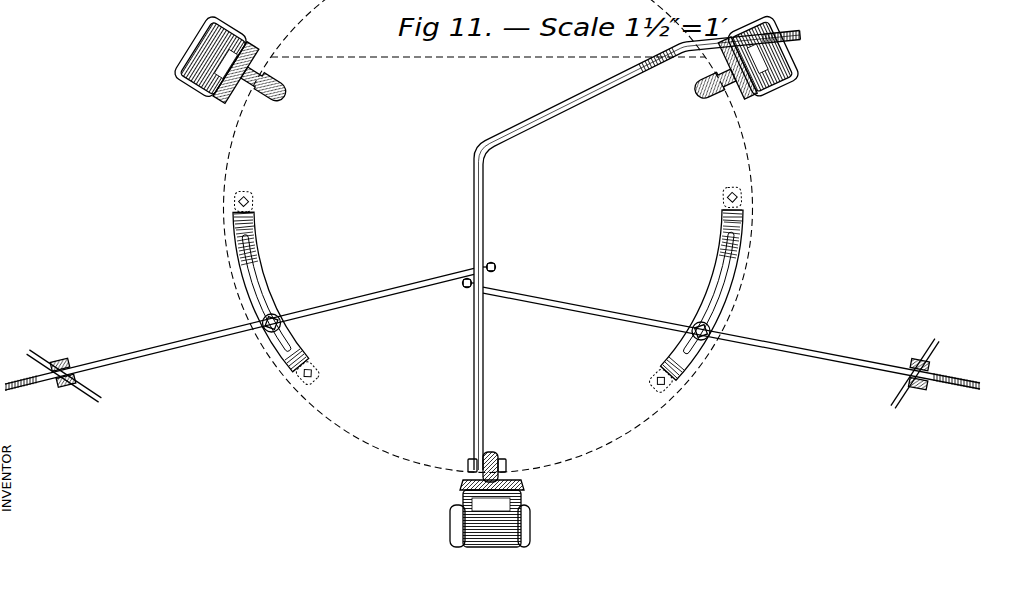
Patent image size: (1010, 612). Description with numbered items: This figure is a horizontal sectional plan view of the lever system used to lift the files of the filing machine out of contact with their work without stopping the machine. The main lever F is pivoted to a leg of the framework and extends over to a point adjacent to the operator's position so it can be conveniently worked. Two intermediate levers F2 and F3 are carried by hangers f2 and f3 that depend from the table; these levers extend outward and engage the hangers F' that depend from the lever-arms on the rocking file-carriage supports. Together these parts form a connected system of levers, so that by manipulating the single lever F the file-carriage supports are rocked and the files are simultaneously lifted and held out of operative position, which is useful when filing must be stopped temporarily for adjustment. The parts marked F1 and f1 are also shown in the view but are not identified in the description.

The lever F is at (449, 450).
The hanger F' is at (632, 251).
The adjustable clamp F1 is at (105, 345).
The intermediate lever F2 is at (850, 343).
The intermediate lever F3 is at (420, 331).
The roller drum f1 is at (248, 48).
The hanger f2 is at (746, 216).
The hanger f3 is at (262, 248).